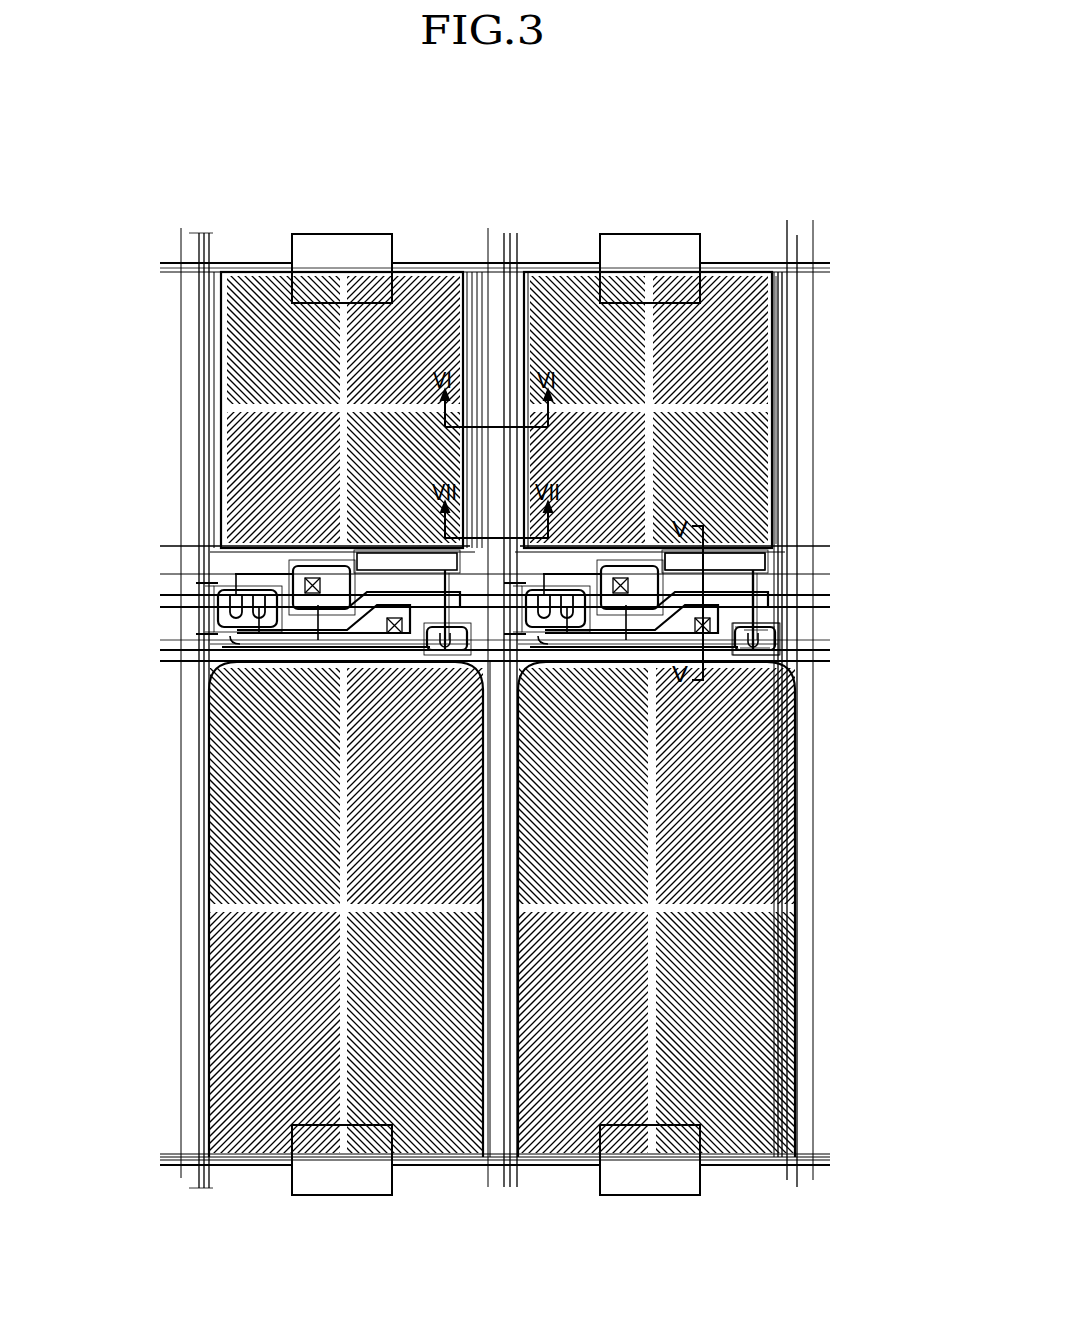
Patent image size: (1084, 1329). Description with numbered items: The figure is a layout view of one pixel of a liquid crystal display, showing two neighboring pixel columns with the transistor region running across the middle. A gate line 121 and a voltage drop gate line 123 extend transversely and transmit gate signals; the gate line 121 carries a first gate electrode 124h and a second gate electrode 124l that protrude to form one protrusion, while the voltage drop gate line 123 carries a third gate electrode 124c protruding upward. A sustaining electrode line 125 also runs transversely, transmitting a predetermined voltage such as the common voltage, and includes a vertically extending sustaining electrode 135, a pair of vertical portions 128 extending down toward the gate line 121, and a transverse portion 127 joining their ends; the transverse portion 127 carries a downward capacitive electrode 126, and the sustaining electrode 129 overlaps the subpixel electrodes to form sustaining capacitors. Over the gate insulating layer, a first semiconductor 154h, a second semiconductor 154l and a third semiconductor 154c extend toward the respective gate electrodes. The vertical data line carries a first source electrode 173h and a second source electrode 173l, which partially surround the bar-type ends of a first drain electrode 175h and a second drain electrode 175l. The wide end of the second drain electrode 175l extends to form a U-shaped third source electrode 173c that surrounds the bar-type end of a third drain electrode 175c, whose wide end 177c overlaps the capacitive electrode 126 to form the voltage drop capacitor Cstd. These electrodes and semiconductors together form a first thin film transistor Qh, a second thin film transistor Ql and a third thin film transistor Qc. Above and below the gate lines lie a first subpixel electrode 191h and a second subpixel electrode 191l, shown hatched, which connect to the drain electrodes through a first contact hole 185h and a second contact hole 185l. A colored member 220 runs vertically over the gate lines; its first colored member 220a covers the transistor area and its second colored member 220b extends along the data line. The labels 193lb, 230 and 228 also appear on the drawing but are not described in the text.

The sustaining electrode 135 is at (658, 238).
The sustaining electrode line 125 is at (735, 270).
The sustaining electrode 129 is at (700, 288).
The second colored member 220b is at (788, 322).
The first colored member 220a is at (270, 573).
The colored member 220 is at (887, 982).
The vertical portions 128 is at (790, 356).
The first subpixel electrode 191h is at (750, 394).
The second subpixel electrode 191l is at (225, 850).
The low pixel electrode branch 193lb is at (790, 437).
The data line 230 is at (185, 345).
The second thin film transistor Ql is at (300, 582).
The second gate electrode 124l is at (290, 572).
The second source electrode 173l is at (360, 560).
The transverse portion 127 is at (230, 552).
The first drain electrode 175h is at (213, 582).
The first thin film transistor Qh is at (225, 600).
The first semiconductor 154h is at (265, 612).
The first source electrode 173h is at (250, 628).
The first gate electrode 124h is at (215, 640).
The second drain electrode 175l is at (300, 640).
The second semiconductor 154l is at (315, 636).
The first contact hole 185h is at (330, 652).
The voltage drop capacitor Cstd is at (770, 537).
The wide end of the third drain electrode 177c is at (738, 548).
The capacitive electrode 126 is at (800, 580).
The gate line 121 is at (822, 592).
The third drain electrode 175c is at (800, 612).
The connection member 228 is at (800, 638).
The third gate electrode 124c is at (817, 648).
The voltage drop gate line 123 is at (830, 662).
The third thin film transistor Qc is at (760, 652).
The third source electrode 173c is at (770, 655).
The second contact hole 185l is at (760, 655).
The third semiconductor 154c is at (775, 660).